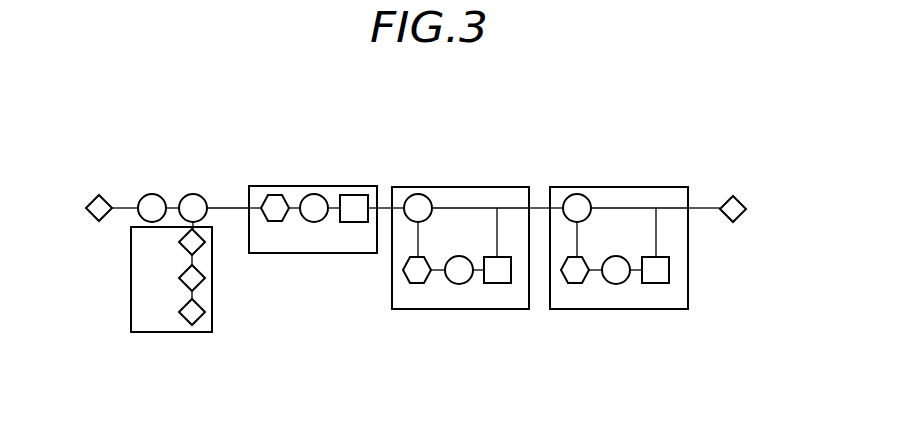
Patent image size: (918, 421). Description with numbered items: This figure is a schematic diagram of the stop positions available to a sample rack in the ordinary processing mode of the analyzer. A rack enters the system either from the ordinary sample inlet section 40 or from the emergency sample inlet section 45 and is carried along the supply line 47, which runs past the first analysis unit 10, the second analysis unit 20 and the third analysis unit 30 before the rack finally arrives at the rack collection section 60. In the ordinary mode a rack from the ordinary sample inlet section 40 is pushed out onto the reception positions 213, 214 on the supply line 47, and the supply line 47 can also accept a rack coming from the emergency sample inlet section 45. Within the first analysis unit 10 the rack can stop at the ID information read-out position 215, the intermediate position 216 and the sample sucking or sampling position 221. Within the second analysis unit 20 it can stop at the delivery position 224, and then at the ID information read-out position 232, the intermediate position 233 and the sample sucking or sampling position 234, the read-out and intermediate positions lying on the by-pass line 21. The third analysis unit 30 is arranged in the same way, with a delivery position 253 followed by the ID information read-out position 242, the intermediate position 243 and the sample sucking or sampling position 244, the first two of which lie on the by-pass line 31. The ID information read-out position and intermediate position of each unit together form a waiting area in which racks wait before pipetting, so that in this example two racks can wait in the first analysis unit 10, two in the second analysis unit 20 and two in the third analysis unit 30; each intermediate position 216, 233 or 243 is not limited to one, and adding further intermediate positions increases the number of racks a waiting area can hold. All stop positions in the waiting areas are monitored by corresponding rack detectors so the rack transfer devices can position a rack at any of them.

The first analysis unit 10 is at (302, 186).
The second analysis unit 20 is at (447, 187).
The third analysis unit 30 is at (605, 187).
The ordinary sample inlet section 40 is at (159, 334).
The emergency sample inlet section 45 is at (96, 194).
The supply line 47 is at (127, 207).
The rack collection section 60 is at (742, 218).
The by-pass line 21 is at (447, 266).
The by-pass line 31 is at (605, 266).
The reception position 213 is at (157, 193).
The reception position 214 is at (193, 193).
The ID information read-out position 215 is at (278, 222).
The intermediate position 216 is at (316, 222).
The sample sucking or sampling position 221 is at (355, 195).
The delivery position 224 is at (417, 194).
The ID information read-out position 232 is at (419, 283).
The intermediate position 233 is at (460, 284).
The sample sucking or sampling position 234 is at (500, 284).
The ID information read-out position 242 is at (577, 283).
The intermediate position 243 is at (618, 284).
The sample sucking or sampling position 244 is at (660, 284).
The delivery position 253 is at (576, 194).